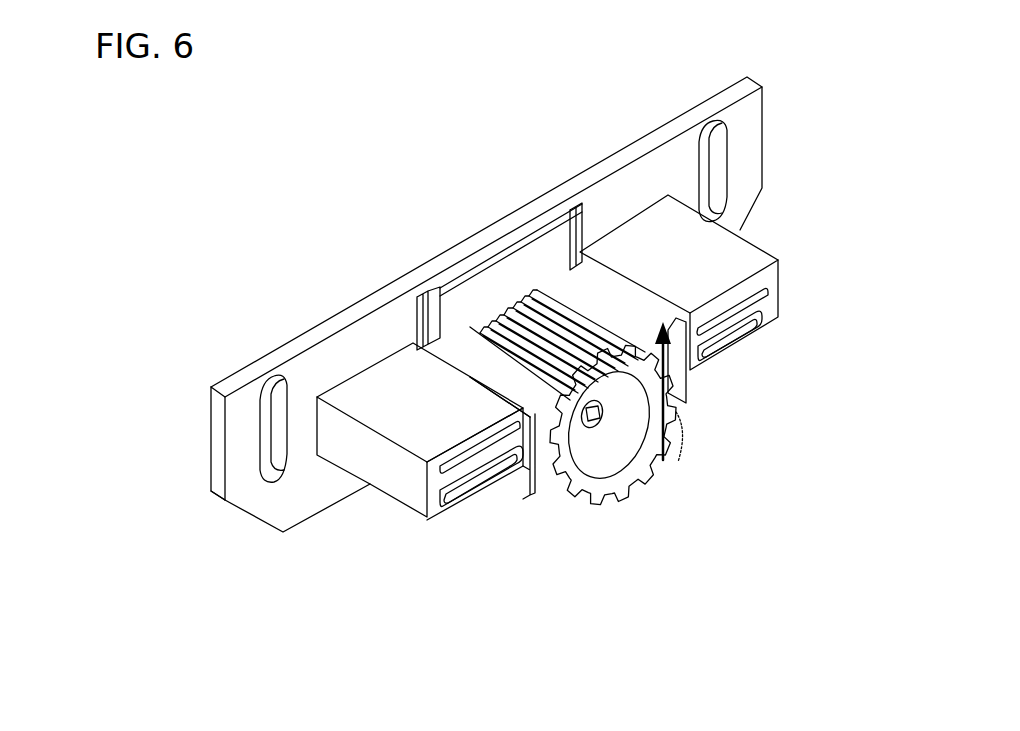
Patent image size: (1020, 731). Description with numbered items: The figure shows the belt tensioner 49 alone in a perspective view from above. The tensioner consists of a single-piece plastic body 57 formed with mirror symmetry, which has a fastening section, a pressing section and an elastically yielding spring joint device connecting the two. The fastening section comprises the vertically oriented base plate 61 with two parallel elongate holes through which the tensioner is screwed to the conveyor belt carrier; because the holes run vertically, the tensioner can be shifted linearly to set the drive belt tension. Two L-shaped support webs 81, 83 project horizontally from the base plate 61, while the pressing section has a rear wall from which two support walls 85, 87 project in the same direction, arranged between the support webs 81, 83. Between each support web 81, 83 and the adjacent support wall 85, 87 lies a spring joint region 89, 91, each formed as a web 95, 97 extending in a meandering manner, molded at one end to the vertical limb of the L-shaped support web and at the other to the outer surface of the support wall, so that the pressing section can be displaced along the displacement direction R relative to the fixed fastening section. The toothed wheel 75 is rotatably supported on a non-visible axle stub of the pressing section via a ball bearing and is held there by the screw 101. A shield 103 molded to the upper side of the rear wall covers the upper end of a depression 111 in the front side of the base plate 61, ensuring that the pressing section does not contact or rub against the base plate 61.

The belt tensioner 49 is at (124, 428).
The plastic body 57 is at (806, 137).
The base plate 61 is at (300, 343).
The toothed wheel 75 is at (618, 478).
The L-shaped support web 81 is at (392, 485).
The L-shaped support web 83 is at (745, 260).
The support wall 85 is at (483, 377).
The support wall 87 is at (617, 303).
The spring joint region 89 is at (460, 530).
The spring joint region 91 is at (748, 366).
The meandering web 95 is at (485, 490).
The meandering web 97 is at (738, 343).
The screw 101 is at (603, 420).
The shield 103 is at (518, 270).
The depression 111 is at (410, 335).